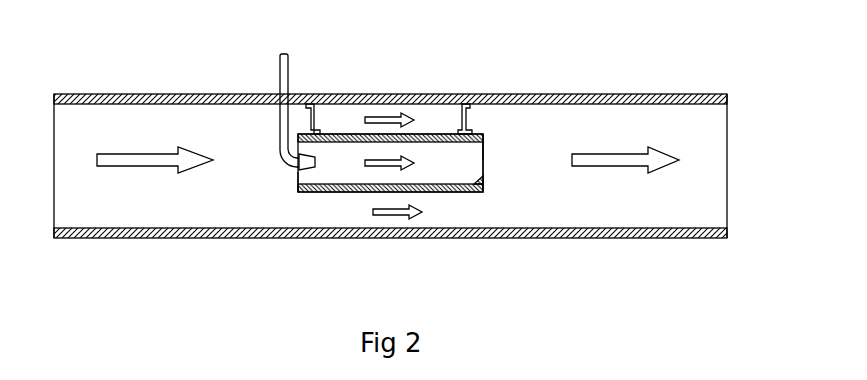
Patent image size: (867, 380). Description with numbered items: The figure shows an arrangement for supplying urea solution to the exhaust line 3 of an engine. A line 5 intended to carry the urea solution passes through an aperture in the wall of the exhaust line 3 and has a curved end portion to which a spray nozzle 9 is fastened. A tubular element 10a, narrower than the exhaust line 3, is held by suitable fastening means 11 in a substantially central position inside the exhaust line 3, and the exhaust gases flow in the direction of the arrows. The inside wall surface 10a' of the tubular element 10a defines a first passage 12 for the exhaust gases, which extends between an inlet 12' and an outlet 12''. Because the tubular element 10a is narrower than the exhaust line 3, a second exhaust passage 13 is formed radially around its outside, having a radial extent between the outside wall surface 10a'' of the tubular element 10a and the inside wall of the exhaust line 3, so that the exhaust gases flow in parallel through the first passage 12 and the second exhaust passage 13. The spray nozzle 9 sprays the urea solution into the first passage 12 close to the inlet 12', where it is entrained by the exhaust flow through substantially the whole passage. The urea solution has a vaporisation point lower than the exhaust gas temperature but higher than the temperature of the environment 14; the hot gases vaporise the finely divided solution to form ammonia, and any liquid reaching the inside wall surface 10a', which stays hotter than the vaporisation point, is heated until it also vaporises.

The exhaust line 3 is at (152, 97).
The line 5 is at (283, 70).
The spray nozzle 9 is at (315, 162).
The tubular element 10a is at (382, 216).
The inside wall surface 10a' is at (506, 163).
The outside wall surface 10a'' is at (420, 202).
The fastening means 11 is at (318, 117).
The first passage 12 is at (359, 227).
The inlet 12' is at (259, 192).
The outlet 12'' is at (513, 137).
The second exhaust passage 13 is at (418, 118).
The environment 14 is at (655, 21).